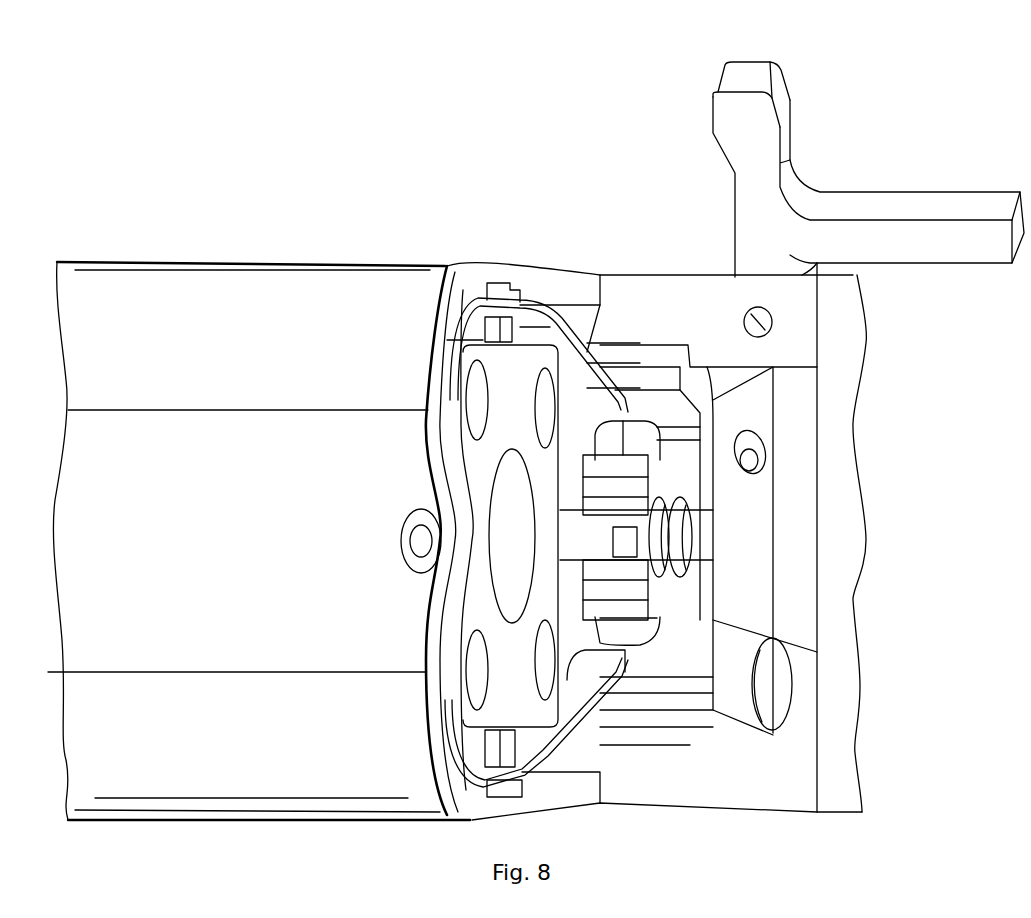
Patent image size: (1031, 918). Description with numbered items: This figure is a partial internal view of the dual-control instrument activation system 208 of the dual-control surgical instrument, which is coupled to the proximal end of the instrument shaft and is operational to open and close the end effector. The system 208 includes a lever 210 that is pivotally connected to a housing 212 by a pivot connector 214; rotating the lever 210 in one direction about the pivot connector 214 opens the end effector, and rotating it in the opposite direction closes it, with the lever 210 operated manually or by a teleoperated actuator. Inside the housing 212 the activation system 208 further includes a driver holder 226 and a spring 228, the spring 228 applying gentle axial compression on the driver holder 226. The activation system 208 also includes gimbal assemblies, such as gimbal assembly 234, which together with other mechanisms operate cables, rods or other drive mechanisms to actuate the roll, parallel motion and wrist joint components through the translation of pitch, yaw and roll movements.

The dual-control instrument activation system 208 is at (928, 95).
The lever 210 is at (753, 62).
The housing 212 is at (170, 262).
The pivot connector 214 is at (747, 476).
The driver holder 226 is at (688, 530).
The spring 228 is at (667, 580).
The gimbal assembly 234 is at (478, 607).